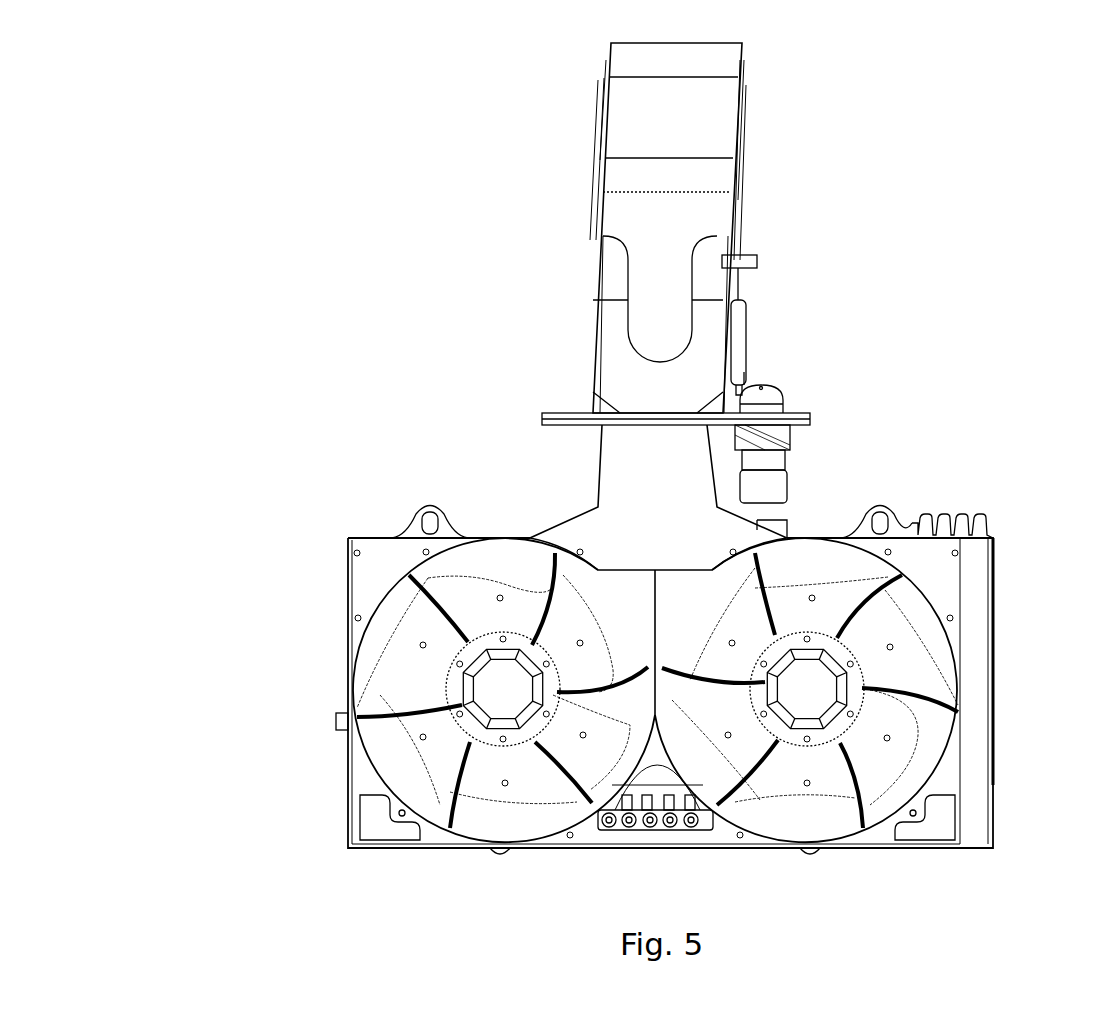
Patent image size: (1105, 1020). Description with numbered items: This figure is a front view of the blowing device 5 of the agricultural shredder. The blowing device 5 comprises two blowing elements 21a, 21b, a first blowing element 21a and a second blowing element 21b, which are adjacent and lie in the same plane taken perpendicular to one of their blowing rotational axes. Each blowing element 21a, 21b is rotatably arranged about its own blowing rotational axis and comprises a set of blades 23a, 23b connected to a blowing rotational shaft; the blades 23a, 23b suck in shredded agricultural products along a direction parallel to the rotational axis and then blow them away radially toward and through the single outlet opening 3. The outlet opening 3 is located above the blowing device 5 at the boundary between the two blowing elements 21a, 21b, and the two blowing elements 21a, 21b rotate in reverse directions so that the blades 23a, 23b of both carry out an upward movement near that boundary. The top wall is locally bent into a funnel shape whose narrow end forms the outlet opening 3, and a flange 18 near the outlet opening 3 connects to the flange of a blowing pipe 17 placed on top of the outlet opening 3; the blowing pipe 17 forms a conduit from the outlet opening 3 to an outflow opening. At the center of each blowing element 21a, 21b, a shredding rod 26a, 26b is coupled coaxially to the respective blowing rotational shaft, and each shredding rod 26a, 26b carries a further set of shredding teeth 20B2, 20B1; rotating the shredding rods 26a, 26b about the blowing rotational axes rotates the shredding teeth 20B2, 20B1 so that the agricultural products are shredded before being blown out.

The blowing device 5 is at (972, 348).
The blowing pipe 17 is at (670, 247).
The flange 18 is at (570, 420).
The outlet opening 3 is at (656, 498).
The first blowing element 21a is at (388, 510).
The second blowing element 21b is at (915, 508).
The set of blades 23a is at (368, 701).
The set of blades 23b is at (940, 705).
The shredding rod 26a is at (503, 689).
The shredding rod 26b is at (807, 689).
The shredding teeth 20B2 is at (460, 723).
The shredding teeth 20B1 is at (790, 733).